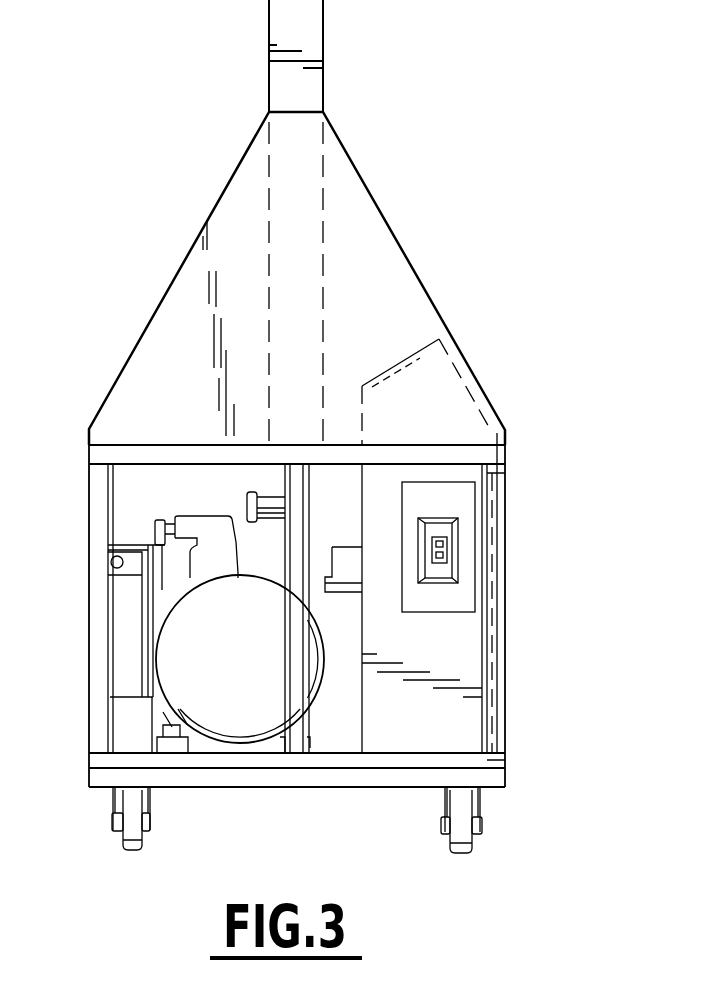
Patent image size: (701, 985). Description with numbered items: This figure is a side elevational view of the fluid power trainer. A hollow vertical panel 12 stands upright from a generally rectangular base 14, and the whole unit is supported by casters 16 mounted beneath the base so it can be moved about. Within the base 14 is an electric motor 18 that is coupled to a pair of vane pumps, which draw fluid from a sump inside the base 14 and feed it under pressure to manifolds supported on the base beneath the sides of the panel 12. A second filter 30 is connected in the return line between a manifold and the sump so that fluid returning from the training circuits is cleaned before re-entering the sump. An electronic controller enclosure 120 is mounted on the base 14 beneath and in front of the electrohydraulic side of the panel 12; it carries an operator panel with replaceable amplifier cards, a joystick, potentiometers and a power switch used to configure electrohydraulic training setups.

The hollow vertical panel 12 is at (312, 40).
The base 14 is at (98, 625).
The casters 16 is at (122, 840).
The electric motor 18 is at (177, 670).
The second filter 30 is at (200, 557).
The electronic controller enclosure 120 is at (466, 461).